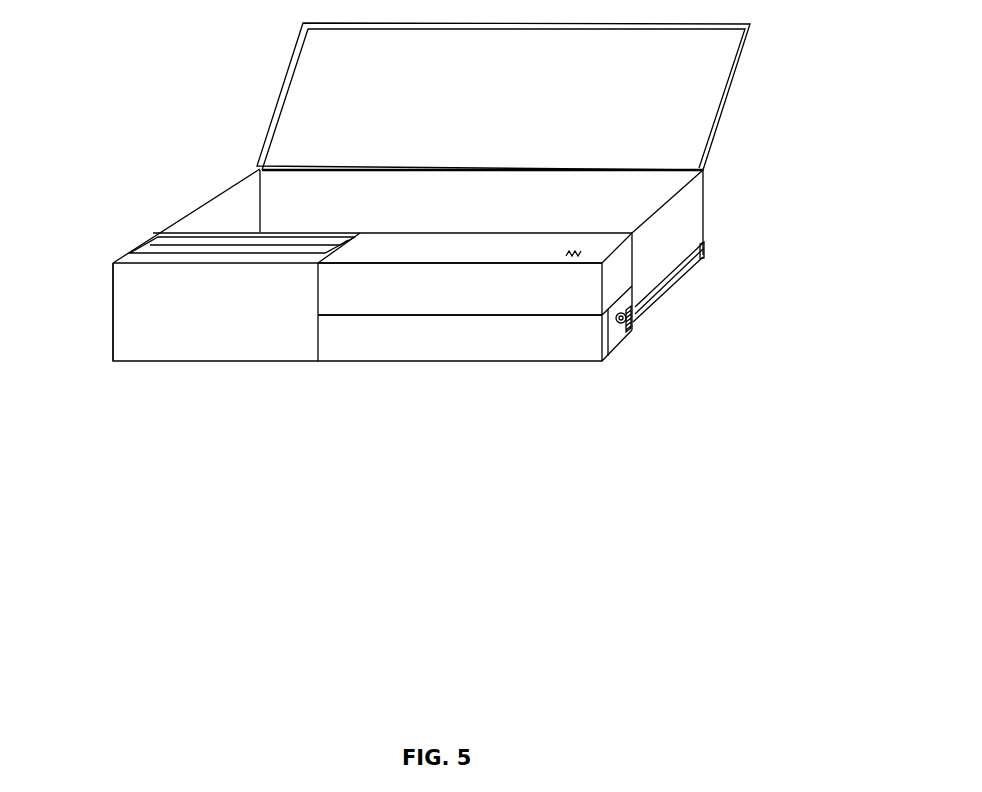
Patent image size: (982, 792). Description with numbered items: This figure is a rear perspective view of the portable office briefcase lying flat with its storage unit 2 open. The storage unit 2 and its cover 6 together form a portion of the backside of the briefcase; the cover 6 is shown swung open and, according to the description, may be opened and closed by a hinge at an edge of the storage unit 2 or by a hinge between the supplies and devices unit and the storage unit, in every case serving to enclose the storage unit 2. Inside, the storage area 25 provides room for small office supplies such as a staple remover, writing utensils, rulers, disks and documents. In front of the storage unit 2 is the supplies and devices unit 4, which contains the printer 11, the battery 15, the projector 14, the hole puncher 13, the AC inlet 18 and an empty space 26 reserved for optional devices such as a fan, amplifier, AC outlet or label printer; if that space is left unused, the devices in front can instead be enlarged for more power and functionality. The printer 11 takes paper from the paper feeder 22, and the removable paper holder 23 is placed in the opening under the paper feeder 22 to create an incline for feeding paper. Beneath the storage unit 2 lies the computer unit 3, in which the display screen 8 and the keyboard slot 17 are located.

The storage unit 2 is at (323, 213).
The computer unit 3 is at (704, 243).
The supplies and devices unit 4 is at (110, 317).
The cover 6 is at (707, 103).
The display screen 8 is at (692, 270).
The printer 11 is at (217, 320).
The hole puncher 13 is at (635, 323).
The projector 14 is at (620, 328).
The battery 15 is at (560, 352).
The keyboard slot 17 is at (704, 253).
The AC inlet 18 is at (573, 255).
The paper feeder 22 is at (143, 247).
The paper holder 23 is at (172, 232).
The storage area 25 is at (623, 218).
The empty space 26 is at (663, 290).